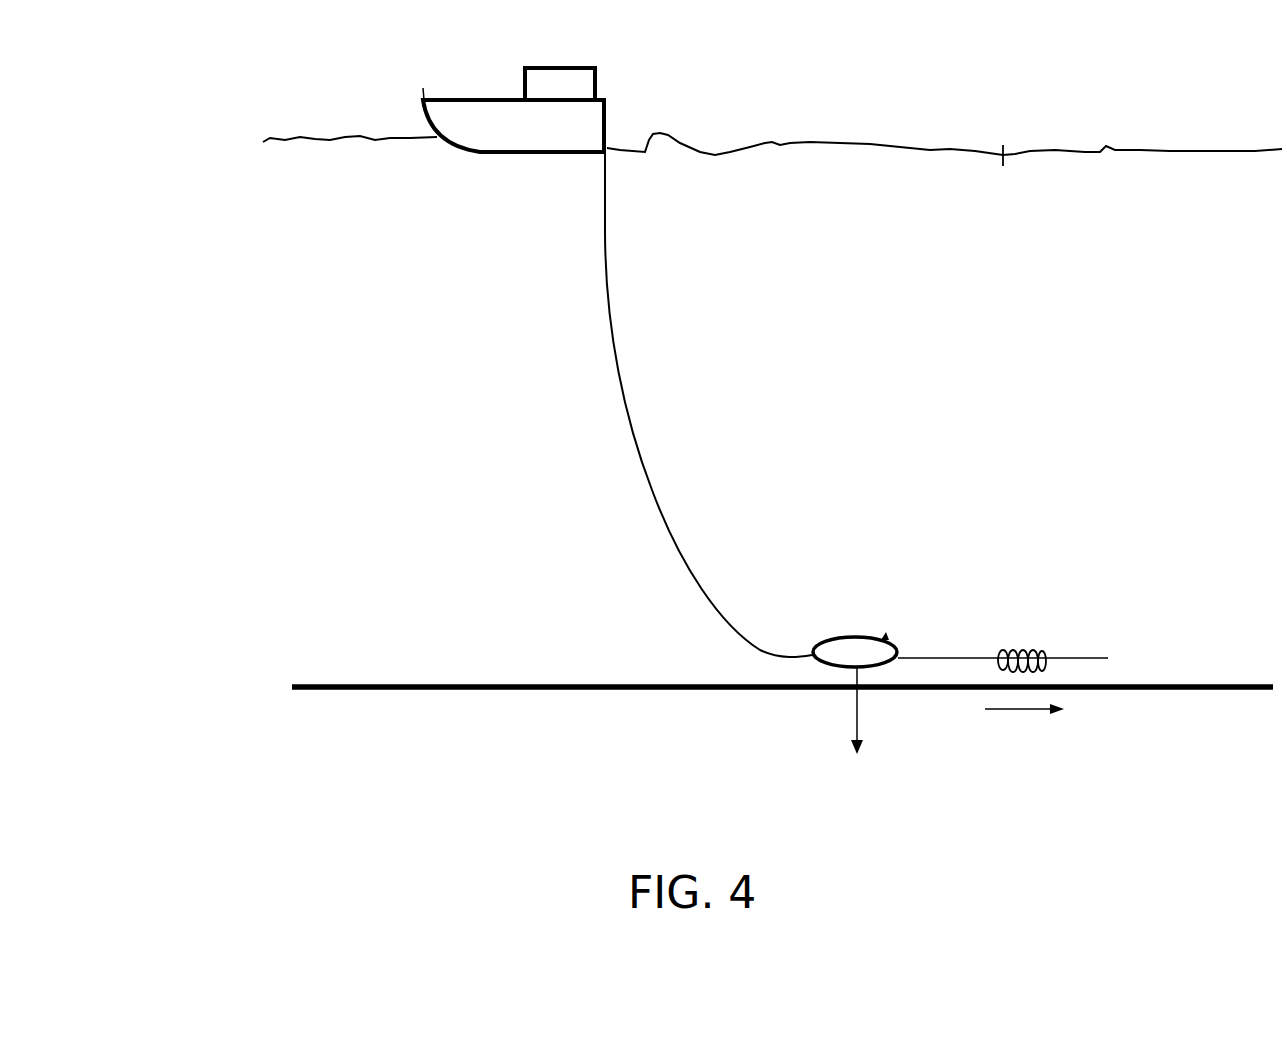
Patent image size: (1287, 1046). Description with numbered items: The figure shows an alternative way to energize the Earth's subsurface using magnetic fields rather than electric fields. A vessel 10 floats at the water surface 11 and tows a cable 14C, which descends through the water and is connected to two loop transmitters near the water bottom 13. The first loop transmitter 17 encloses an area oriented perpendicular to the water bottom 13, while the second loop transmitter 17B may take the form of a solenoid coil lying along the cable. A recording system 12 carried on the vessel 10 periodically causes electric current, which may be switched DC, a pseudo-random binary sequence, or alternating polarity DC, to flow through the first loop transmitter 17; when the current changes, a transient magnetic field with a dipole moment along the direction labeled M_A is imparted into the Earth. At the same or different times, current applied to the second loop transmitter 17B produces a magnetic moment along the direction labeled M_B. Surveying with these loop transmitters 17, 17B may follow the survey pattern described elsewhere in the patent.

The vessel 10 is at (466, 108).
The water surface 11 is at (893, 146).
The recording system 12 is at (570, 75).
The water bottom 13 is at (1103, 686).
The cable 14C is at (626, 393).
The sensor node / weight 17 is at (850, 636).
The second loop transmitter 17B is at (1017, 657).